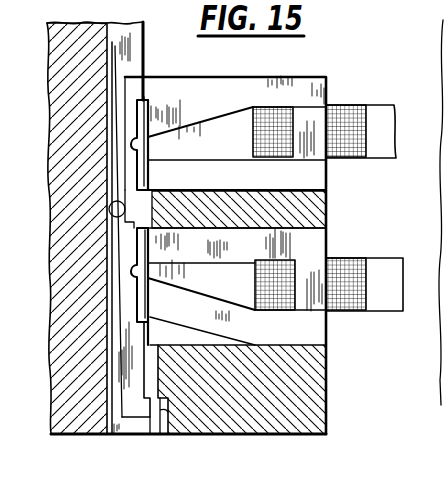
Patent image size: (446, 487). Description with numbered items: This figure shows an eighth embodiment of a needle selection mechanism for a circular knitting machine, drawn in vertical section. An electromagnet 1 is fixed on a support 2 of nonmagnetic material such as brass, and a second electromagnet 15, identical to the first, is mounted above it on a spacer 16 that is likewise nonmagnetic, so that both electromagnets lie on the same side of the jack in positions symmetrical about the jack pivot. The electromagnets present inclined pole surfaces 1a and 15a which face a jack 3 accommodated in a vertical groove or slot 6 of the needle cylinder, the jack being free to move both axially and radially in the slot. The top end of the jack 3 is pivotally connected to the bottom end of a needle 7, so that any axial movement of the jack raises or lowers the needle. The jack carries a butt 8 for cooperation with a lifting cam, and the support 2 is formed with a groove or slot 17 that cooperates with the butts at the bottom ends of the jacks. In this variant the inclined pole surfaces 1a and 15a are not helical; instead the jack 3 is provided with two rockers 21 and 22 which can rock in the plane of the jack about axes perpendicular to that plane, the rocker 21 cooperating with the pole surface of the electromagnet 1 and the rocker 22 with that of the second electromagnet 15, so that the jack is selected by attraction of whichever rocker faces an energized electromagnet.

The electromagnet 1 is at (326, 330).
The inclined pole surface 1a is at (150, 258).
The support 2 is at (323, 395).
The jack 3 is at (125, 353).
The groove or slot 6 is at (143, 29).
The needle 7 is at (113, 59).
The butt 8 is at (145, 418).
The second electromagnet 15 is at (315, 88).
The inclined pole surface 15a is at (150, 135).
The spacer 16 is at (322, 202).
The groove or slot 17 is at (164, 413).
The rocker 21 is at (143, 300).
The rocker 22 is at (147, 133).